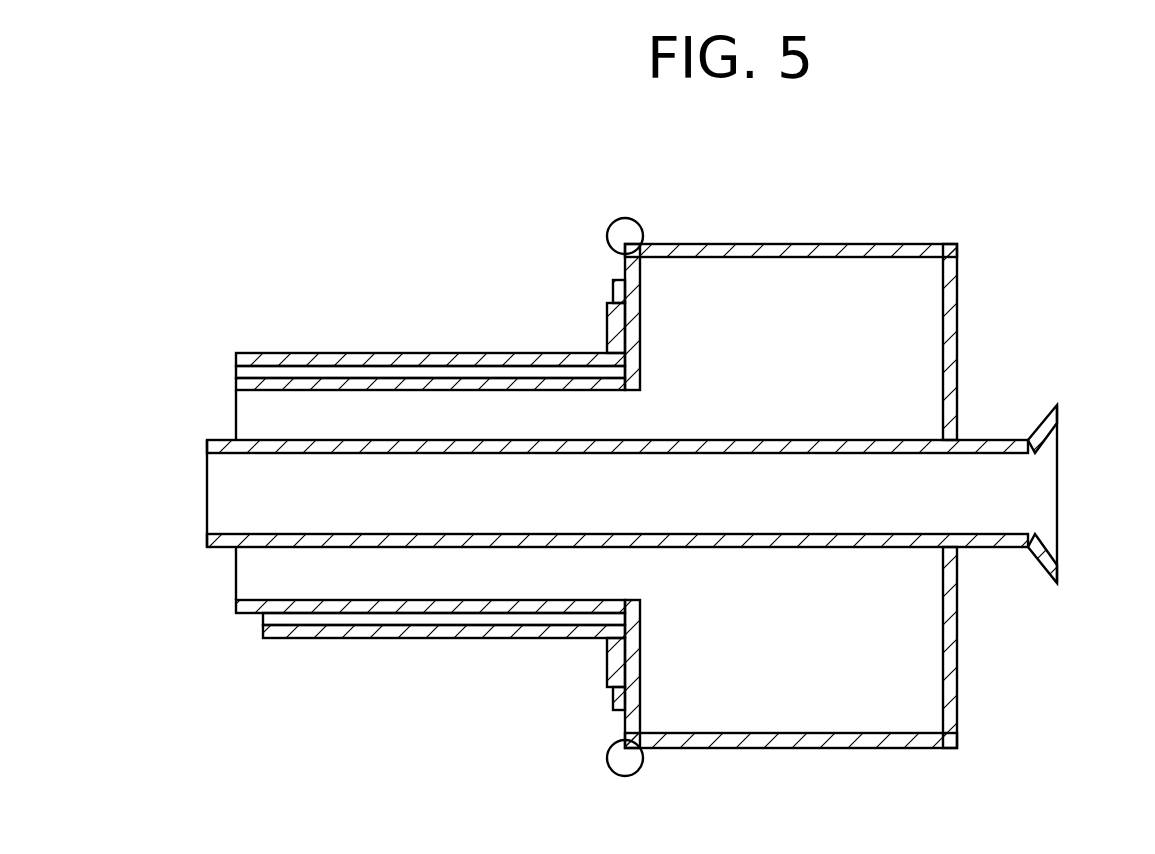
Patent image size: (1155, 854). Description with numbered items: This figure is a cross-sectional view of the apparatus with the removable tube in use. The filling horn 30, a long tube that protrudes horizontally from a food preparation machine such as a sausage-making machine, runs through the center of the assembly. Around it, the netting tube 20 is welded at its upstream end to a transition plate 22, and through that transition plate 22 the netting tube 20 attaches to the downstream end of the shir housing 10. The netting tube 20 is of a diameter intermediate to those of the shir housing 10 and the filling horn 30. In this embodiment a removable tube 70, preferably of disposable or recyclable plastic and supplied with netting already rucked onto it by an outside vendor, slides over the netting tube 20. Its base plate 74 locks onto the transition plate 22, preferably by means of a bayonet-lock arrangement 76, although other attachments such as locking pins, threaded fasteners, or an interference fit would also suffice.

The shir housing 10 is at (755, 748).
The netting tube 20 is at (275, 600).
The transition plate 22 is at (640, 280).
The filling horn 30 is at (1020, 535).
The removable tube 70 is at (407, 637).
The base plate 74 is at (610, 653).
The bayonet-lock arrangement 76 is at (613, 283).